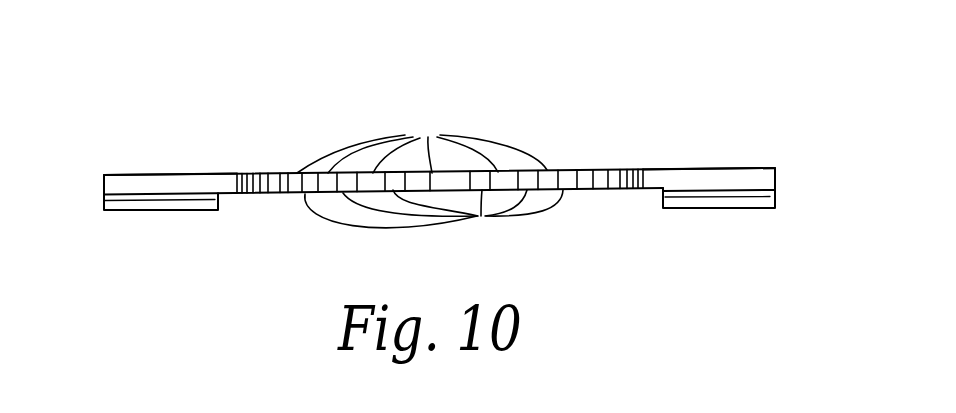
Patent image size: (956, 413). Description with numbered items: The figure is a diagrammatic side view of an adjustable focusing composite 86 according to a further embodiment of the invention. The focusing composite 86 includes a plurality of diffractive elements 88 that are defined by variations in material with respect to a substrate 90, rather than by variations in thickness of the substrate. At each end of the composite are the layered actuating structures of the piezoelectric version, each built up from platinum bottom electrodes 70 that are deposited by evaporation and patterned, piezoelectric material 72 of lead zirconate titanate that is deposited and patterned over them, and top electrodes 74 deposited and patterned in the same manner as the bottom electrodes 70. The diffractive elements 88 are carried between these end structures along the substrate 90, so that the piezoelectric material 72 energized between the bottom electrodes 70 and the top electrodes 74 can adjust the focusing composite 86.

The platinum bottom electrodes 70 is at (142, 210).
The piezoelectric material 72 is at (103, 197).
The top electrodes 74 is at (137, 183).
The focusing composite 86 is at (549, 139).
The diffractive elements 88 is at (422, 139).
The substrate 90 is at (434, 220).